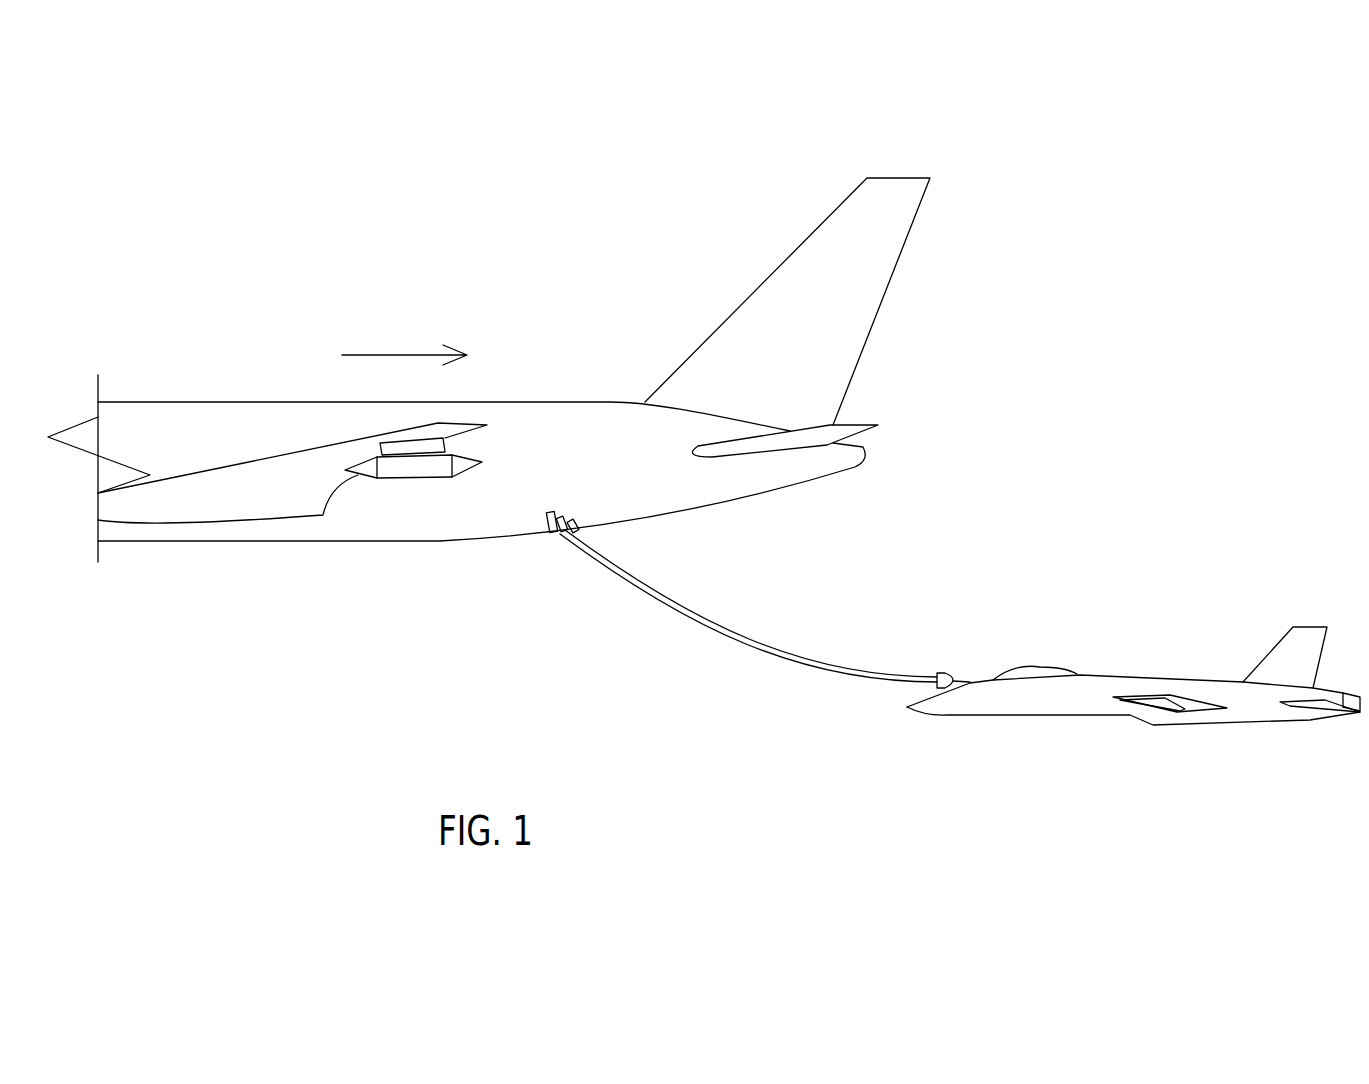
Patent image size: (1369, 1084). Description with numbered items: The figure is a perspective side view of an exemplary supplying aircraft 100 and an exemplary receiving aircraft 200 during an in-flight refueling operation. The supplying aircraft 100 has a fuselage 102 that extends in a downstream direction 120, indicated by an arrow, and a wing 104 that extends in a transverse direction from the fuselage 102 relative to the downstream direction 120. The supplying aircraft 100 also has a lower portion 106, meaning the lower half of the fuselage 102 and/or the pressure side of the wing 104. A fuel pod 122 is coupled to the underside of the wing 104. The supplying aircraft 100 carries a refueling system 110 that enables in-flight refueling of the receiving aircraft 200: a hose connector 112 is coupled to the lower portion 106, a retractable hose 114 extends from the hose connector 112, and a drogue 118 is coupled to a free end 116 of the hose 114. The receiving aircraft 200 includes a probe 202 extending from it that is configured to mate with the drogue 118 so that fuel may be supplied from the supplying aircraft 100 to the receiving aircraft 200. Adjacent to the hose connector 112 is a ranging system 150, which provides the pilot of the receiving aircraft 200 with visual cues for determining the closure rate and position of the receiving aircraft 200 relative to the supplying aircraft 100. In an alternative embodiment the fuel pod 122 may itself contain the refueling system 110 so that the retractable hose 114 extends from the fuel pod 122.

The supplying aircraft 100 is at (514, 370).
The fuselage 102 is at (260, 418).
The wing 104 is at (227, 493).
The lower portion 106 is at (420, 580).
The refueling system 110 is at (767, 614).
The hose connector 112 is at (562, 533).
The retractable hose 114 is at (763, 660).
The free end 116 is at (918, 643).
The drogue 118 is at (948, 672).
The downstream direction 120 is at (388, 355).
The fuel pod 122 is at (387, 480).
The ranging system 150 is at (519, 568).
The receiving aircraft 200 is at (1133, 632).
The probe 202 is at (970, 680).